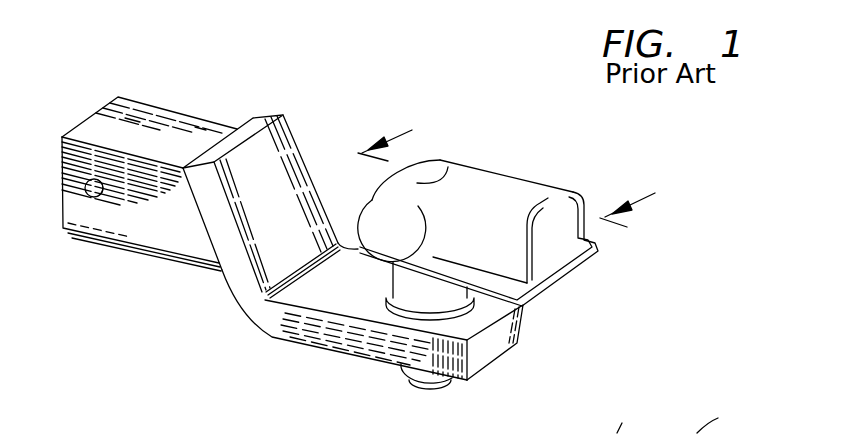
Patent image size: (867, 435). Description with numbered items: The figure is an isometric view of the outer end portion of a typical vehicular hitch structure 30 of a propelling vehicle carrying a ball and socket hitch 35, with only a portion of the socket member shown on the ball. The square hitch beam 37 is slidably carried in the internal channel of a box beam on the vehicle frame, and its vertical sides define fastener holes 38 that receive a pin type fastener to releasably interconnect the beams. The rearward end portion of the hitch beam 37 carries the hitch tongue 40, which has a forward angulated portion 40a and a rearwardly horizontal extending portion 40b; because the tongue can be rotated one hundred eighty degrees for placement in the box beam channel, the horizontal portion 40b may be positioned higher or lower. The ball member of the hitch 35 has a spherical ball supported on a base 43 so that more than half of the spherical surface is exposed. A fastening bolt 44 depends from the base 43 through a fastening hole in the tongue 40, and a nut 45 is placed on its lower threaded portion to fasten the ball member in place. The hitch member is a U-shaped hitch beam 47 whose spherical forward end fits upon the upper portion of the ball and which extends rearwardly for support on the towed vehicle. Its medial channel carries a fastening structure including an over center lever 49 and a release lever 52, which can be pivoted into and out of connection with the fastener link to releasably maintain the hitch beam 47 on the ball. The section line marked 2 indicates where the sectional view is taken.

The section line 2- 2 is at (506, 166).
The vehicular hitch structure 30 is at (227, 86).
The ball and socket hitch 35 is at (478, 127).
The square hitch beam 37 is at (162, 125).
The fastener holes 38 is at (105, 197).
The hitch tongue 40 is at (240, 315).
The forward angulated portion 40a is at (283, 175).
The rearwardly horizontal extending portion 40b is at (363, 340).
The base 43 is at (415, 292).
The fastening bolt 44 is at (425, 387).
The nut 45 is at (412, 378).
The U-shaped hitch beam 47 is at (515, 197).
The over center lever 49 is at (641, 422).
The release lever 52 is at (726, 417).